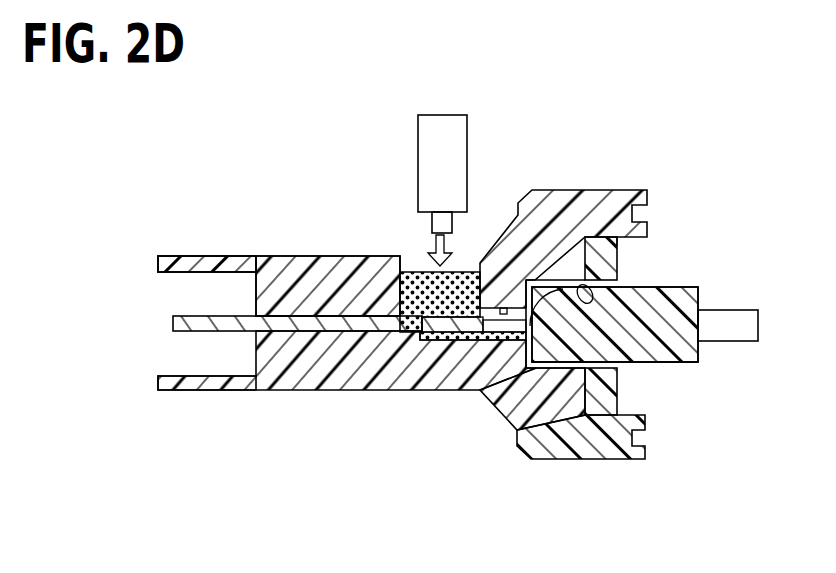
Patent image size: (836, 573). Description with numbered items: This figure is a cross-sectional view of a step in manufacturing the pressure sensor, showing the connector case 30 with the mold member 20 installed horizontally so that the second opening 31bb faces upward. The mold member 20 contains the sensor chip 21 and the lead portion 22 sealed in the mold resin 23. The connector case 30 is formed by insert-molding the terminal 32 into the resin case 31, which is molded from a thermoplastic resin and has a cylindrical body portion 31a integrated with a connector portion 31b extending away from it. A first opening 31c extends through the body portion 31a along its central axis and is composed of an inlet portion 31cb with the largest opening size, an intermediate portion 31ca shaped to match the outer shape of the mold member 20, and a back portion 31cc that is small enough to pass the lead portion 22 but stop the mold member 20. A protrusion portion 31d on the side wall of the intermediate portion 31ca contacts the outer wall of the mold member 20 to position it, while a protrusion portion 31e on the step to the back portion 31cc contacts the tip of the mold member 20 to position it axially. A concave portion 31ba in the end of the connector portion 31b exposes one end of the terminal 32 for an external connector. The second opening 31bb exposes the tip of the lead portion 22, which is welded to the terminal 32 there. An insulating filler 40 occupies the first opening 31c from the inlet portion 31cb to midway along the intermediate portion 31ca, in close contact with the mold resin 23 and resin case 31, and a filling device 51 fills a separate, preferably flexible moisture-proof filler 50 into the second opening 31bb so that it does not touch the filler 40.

The mold member 20 is at (690, 372).
The sensor chip 21 is at (732, 345).
The lead portion 22 is at (463, 325).
The mold resin 23 is at (653, 362).
The connector case 30 is at (282, 252).
The resin case 31 is at (313, 388).
The body portion 31a is at (580, 447).
The connector portion 31b is at (348, 380).
The concave portion 31ba is at (262, 378).
The second opening 31bb is at (405, 272).
The first opening 31c is at (712, 105).
The intermediate portion 31ca is at (577, 285).
The inlet portion 31cb is at (617, 238).
The back portion 31cc is at (563, 287).
The protrusion portion 31d is at (558, 368).
The protrusion portion 31e is at (527, 332).
The terminal 32 is at (225, 316).
The filler 40 is at (600, 410).
The filler 50 is at (468, 260).
The filling device 51 is at (418, 125).